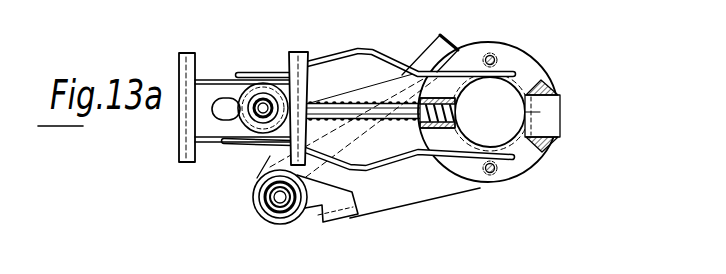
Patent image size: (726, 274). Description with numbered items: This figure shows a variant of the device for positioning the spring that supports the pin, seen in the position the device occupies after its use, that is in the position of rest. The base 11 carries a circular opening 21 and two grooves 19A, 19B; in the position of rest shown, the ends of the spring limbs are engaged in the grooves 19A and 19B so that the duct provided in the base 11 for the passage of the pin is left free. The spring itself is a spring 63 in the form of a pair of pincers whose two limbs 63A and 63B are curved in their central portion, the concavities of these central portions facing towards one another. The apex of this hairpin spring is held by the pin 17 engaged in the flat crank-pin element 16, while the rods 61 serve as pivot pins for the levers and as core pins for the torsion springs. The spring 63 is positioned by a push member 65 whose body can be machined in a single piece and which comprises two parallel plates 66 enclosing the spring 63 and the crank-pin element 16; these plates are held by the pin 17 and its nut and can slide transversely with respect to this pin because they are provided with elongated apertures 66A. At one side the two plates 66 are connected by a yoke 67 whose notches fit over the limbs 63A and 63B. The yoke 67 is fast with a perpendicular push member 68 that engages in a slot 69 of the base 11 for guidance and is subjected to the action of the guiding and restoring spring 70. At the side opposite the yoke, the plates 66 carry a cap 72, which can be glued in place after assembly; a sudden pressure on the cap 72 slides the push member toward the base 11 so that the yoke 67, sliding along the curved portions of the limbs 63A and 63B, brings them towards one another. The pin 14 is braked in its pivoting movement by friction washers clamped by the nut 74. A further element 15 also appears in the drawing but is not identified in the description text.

The base 11 is at (556, 91).
The pin 14 is at (278, 200).
The handle 15 is at (432, 50).
The crank-pin element 16 is at (257, 180).
The pin 17 is at (264, 84).
The groove 19A is at (538, 76).
The groove 19B is at (531, 160).
The circular opening 21 is at (544, 120).
The rod 61 is at (493, 54).
The spring 63 is at (277, 68).
The limb 63A is at (366, 47).
The limb 63B is at (377, 164).
The push member 65 is at (218, 78).
The parallel plate 66 is at (208, 141).
The elongated aperture 66A is at (224, 138).
The yoke 67 is at (302, 49).
The push member 68 is at (378, 116).
The slot 69 is at (451, 112).
The guiding and restoring spring 70 is at (323, 100).
The cap 72 is at (183, 53).
The nut 74 is at (285, 212).